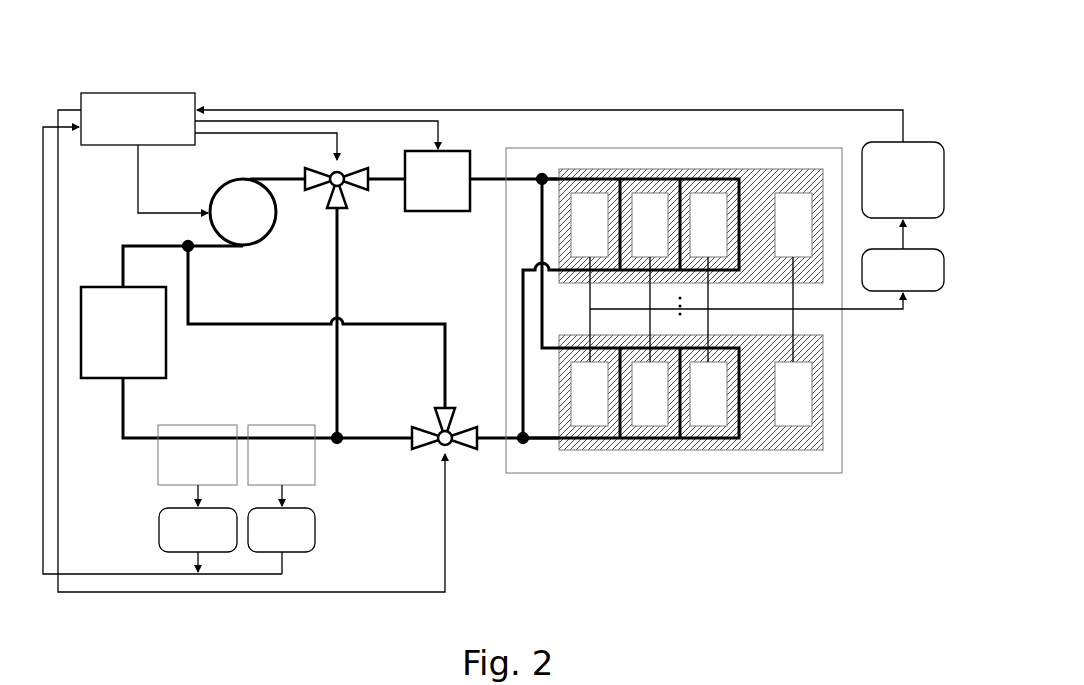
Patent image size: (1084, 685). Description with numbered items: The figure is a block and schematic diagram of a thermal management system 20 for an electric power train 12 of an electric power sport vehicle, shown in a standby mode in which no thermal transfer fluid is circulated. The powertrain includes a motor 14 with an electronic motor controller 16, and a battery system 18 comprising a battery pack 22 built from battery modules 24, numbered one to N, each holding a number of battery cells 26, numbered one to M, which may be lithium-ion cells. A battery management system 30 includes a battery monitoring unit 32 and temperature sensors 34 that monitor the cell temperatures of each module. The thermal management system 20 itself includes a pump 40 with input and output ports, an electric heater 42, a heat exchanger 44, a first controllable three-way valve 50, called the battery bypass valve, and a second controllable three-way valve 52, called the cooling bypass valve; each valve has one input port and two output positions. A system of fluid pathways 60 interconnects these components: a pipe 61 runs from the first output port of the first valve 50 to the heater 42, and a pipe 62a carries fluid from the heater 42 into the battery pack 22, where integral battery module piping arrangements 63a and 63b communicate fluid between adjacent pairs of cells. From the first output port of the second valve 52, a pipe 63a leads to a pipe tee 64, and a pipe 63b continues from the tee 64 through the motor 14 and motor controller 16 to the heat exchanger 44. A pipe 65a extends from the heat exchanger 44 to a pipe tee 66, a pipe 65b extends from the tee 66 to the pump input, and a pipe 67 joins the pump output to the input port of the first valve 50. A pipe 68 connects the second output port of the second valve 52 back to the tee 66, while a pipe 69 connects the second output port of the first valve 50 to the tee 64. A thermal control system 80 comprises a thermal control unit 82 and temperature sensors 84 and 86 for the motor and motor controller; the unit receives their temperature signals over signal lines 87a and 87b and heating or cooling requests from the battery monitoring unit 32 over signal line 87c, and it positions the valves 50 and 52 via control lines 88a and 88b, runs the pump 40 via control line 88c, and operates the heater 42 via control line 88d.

The electric power train 12 is at (649, 560).
The motor 14 is at (315, 462).
The electronic motor controller 16 is at (158, 462).
The battery system 18 is at (789, 524).
The thermal management system 20 is at (471, 40).
The battery pack 22 is at (673, 474).
The battery module 24 is at (790, 168).
The battery cell 26 is at (812, 225).
The battery management system 30 is at (921, 128).
The battery monitoring unit 32 is at (918, 218).
The temperature sensor 34 is at (922, 292).
The pump 40 is at (271, 232).
The electric heater 42 is at (418, 212).
The heat exchanger 44 is at (166, 347).
The first controllable 3-way valve 50 is at (352, 197).
The second controllable 3-way valve 52 is at (432, 455).
The system of fluid pathways 60 is at (394, 300).
The pipe 61 is at (386, 178).
The pipe 62a is at (488, 178).
The battery module piping arrangement 63a is at (364, 434).
The battery module piping arrangement 63b is at (142, 432).
The pipe tee 64 is at (343, 448).
The pipe 65a is at (122, 268).
The pipe 65b is at (203, 240).
The pipe tee 66 is at (193, 248).
The pipe 67 is at (289, 176).
The pipe 68 is at (263, 326).
The pipe 69 is at (339, 390).
The thermal control system 80 is at (191, 72).
The thermal control unit 82 is at (165, 93).
The temperature sensor 84 is at (315, 540).
The temperature sensor 86 is at (159, 540).
The signal line 87a is at (290, 565).
The signal line 87b is at (205, 564).
The signal line 87c is at (261, 108).
The control line 88a is at (241, 135).
The control line 88b is at (448, 523).
The control line 88c is at (140, 165).
The control line 88d is at (381, 122).